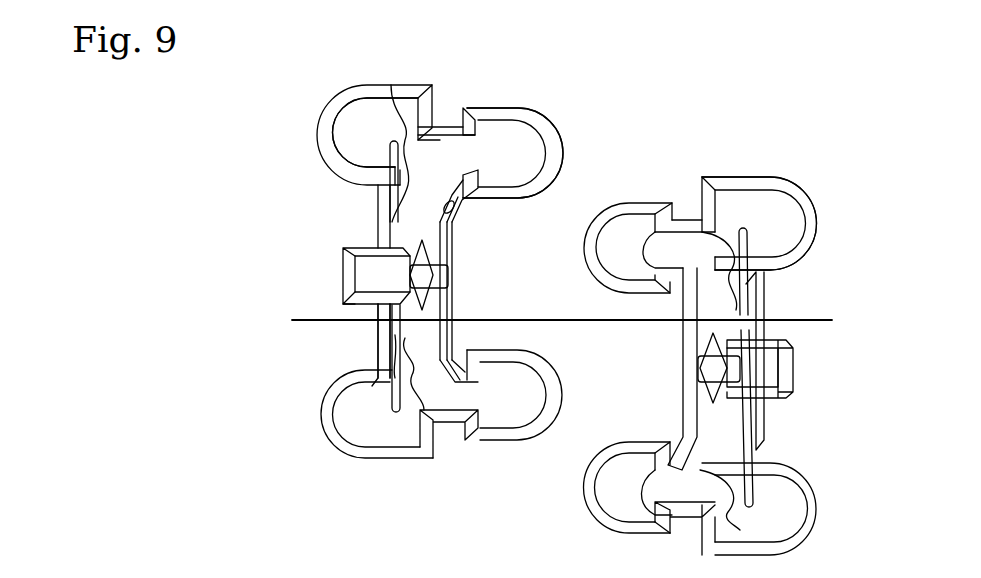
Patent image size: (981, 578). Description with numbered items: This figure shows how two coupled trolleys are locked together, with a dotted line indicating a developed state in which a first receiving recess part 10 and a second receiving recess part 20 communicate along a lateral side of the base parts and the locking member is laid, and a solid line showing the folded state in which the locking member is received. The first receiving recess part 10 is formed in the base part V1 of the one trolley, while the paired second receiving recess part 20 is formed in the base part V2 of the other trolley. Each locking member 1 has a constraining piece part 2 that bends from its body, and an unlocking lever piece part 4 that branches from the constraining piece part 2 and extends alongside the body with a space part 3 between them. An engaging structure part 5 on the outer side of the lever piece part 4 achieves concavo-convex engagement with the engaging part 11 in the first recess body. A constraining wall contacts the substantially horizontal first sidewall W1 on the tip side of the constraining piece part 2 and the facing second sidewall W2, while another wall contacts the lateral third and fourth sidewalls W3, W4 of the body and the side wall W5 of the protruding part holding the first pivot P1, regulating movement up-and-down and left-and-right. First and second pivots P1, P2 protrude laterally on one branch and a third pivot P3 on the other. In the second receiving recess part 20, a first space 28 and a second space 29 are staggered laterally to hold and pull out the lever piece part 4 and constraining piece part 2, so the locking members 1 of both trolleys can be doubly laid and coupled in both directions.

The locking member 1 is at (454, 240).
The constraining piece part 2 is at (450, 127).
The space part 3 is at (391, 98).
The unlocking lever piece part 4 is at (388, 150).
The engaging structure part 5 is at (345, 184).
The first receiving recess part 10 is at (563, 152).
The concavo-convex engaging part 11 is at (342, 141).
The second receiving recess part 20 is at (322, 458).
The first space 28 is at (785, 192).
The second space 29 is at (633, 214).
The first sidewall W1 is at (470, 108).
The second sidewall W2 is at (480, 172).
The third sidewall W3 is at (378, 215).
The fourth sidewall W4 is at (457, 206).
The side wall of protruding part W5 is at (355, 306).
The first pivot P1 is at (343, 276).
The second pivot P2 is at (378, 348).
The third pivot P3 is at (448, 282).
The base part V1 is at (542, 292).
The base part V2 is at (602, 349).